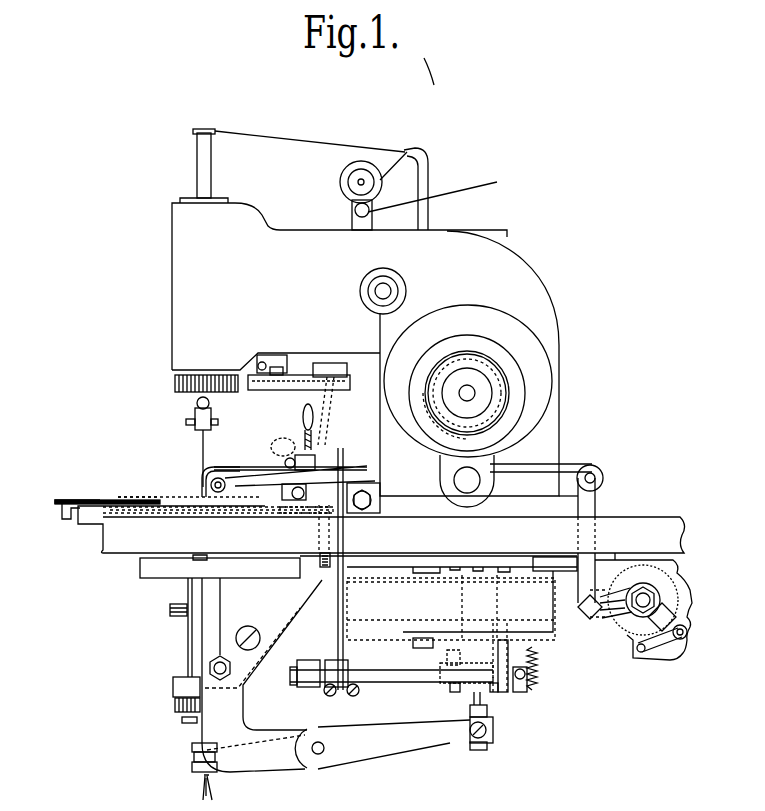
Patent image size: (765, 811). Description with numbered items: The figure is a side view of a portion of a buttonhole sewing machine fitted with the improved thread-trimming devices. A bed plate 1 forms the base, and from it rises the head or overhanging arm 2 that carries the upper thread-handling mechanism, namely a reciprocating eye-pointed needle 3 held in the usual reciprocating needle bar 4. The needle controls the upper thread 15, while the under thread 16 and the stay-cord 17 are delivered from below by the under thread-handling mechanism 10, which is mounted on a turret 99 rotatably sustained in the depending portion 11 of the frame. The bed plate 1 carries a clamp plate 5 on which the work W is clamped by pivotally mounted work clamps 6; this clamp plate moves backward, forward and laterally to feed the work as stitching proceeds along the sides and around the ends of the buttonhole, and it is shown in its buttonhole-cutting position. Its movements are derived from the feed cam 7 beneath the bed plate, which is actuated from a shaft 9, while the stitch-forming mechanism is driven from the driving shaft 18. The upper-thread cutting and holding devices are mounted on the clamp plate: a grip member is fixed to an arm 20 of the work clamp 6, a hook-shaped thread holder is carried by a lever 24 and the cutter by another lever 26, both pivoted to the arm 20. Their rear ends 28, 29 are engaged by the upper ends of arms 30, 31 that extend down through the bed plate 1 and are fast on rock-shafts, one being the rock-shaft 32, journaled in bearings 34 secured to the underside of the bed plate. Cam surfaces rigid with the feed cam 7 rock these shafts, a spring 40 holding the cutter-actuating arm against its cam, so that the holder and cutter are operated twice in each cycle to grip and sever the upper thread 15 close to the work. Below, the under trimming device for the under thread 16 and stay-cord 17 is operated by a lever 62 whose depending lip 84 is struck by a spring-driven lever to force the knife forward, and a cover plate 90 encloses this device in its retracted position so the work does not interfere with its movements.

The bed plate 1 is at (130, 544).
The head or overhanging arm 2 is at (387, 377).
The eye-pointed needle 3 is at (200, 447).
The needle bar 4 is at (197, 163).
The clamp plate 5 is at (206, 509).
The work clamps 6 is at (187, 490).
The feed cam 7 is at (567, 630).
The shaft 9 is at (647, 598).
The under thread-handling mechanism 10 is at (198, 556).
The depending portion of the frame 11 is at (218, 647).
The upper thread 15 is at (266, 137).
The under thread 16 is at (214, 794).
The stay-cord 17 is at (198, 794).
The driving shaft 18 is at (470, 392).
The arm of the work clamp 20 is at (270, 475).
The lever or arm 24 is at (250, 463).
The lever or arm 26 is at (251, 477).
The rear end of lever 24 28 is at (357, 463).
The rear end of lever 26 29 is at (363, 482).
The arm 30 is at (347, 570).
The arm 31 is at (335, 577).
The rock-shaft 32 is at (395, 674).
The bearings 34 is at (307, 688).
The spring 40 is at (538, 668).
The lever 62 is at (70, 499).
The depending lip 84 is at (60, 520).
The cover plate 90 is at (104, 499).
The turret 99 is at (195, 632).
The work W is at (150, 494).